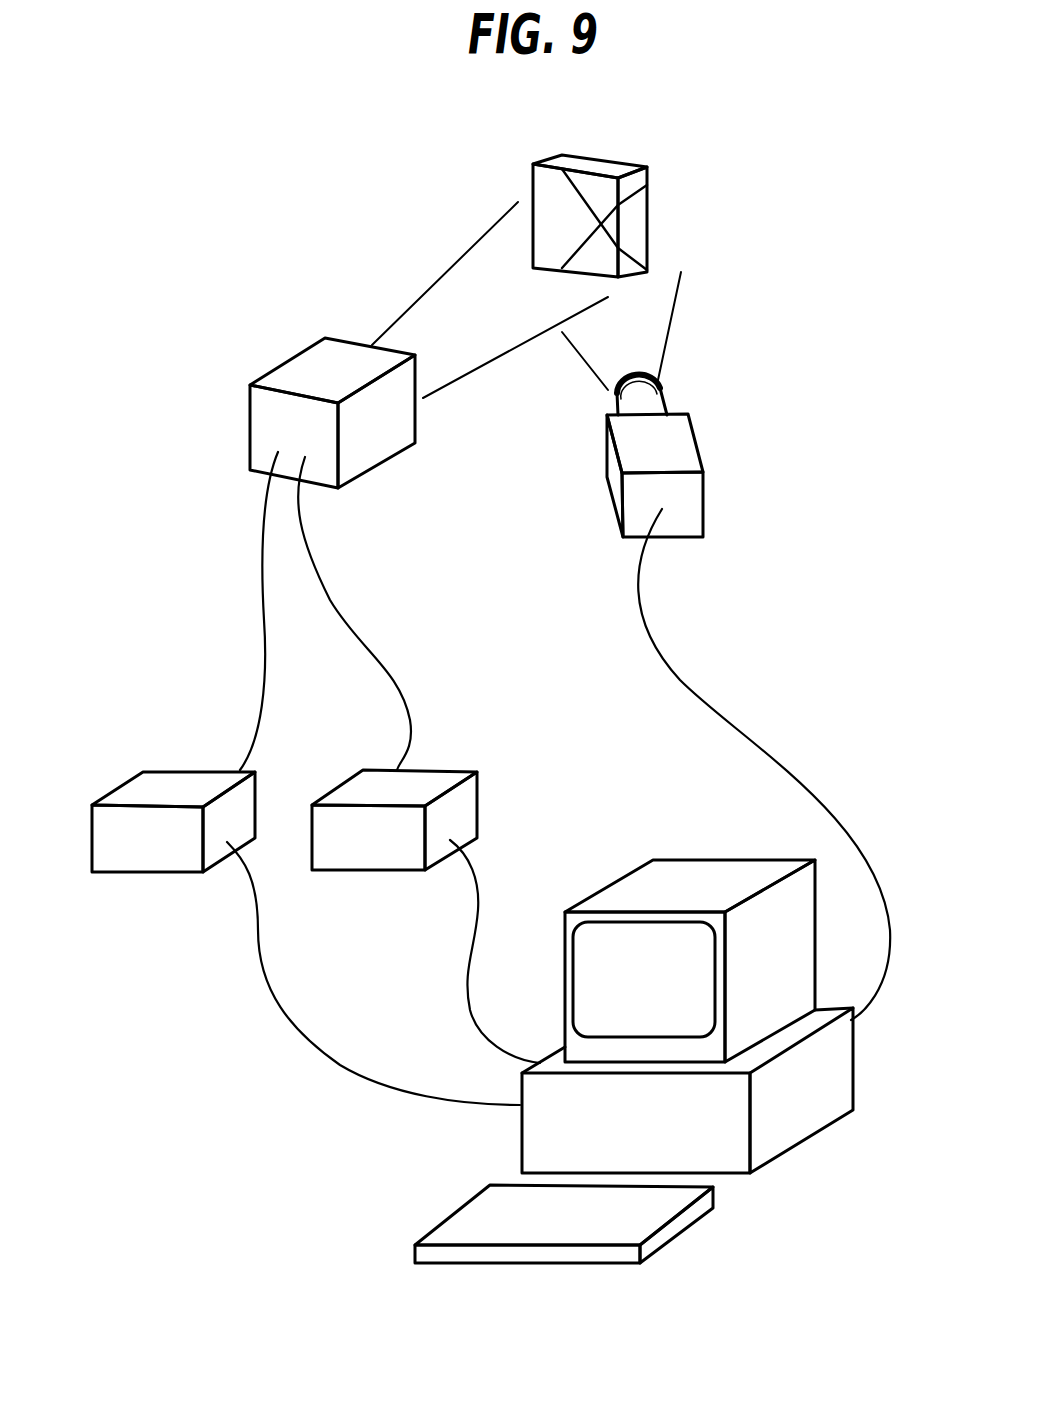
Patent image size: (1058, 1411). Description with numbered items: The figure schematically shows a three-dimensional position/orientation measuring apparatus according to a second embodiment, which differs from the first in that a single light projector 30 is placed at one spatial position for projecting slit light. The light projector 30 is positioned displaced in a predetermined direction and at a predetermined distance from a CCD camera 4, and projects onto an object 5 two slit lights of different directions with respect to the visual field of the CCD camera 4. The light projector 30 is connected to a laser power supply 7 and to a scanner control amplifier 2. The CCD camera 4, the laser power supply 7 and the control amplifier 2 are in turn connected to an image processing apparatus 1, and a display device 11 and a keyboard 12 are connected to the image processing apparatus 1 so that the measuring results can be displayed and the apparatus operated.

The image processing apparatus 1 is at (488, 1148).
The scanner control amplifier 2 is at (420, 783).
The CCD camera 4 is at (677, 455).
The object 5 is at (615, 162).
The laser power supply 7 is at (143, 787).
The display device 11 is at (628, 872).
The keyboard 12 is at (490, 1222).
The light projector 30 is at (312, 360).